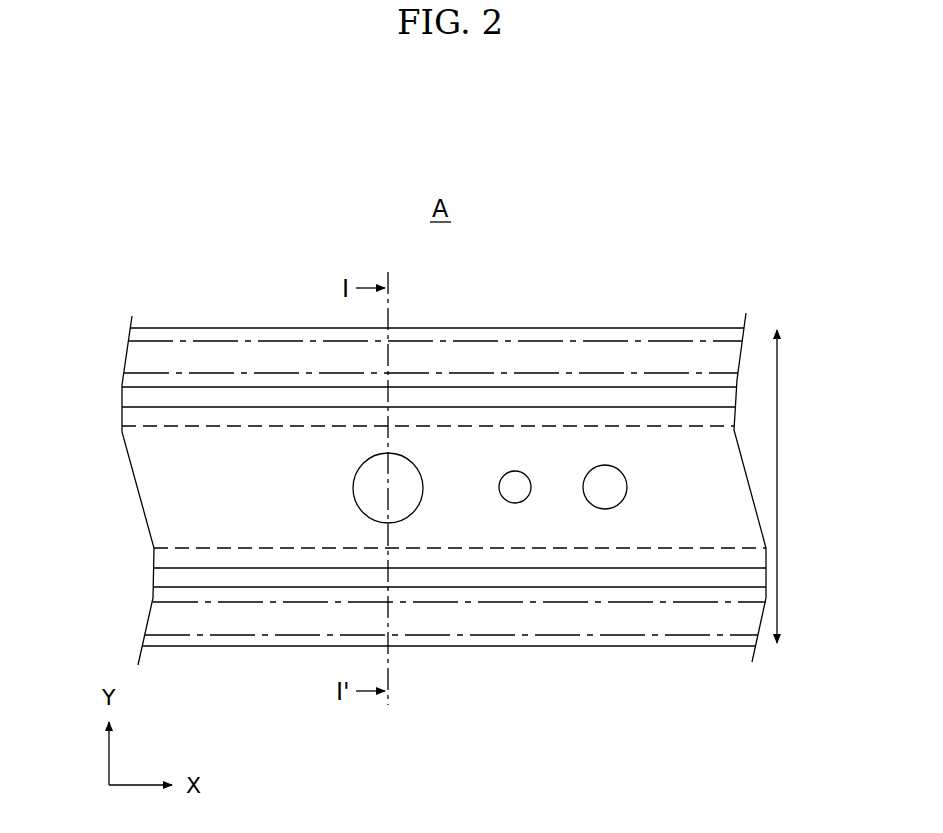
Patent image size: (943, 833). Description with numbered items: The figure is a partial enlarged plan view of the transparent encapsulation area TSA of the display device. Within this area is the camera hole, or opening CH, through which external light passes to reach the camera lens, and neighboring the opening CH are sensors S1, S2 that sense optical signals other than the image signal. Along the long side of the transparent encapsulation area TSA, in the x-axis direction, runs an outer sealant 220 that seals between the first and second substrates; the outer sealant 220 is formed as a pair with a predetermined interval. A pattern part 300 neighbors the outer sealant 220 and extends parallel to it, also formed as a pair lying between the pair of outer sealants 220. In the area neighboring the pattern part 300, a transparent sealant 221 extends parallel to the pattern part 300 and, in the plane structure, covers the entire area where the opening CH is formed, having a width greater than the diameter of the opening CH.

The outer sealant 220 is at (135, 357).
The pattern part 300 is at (135, 397).
The transparent sealant 221 is at (153, 487).
The opening CH is at (413, 513).
The sensor S1 is at (518, 503).
The sensor S2 is at (613, 508).
The transparent encapsulation area TSA is at (802, 486).